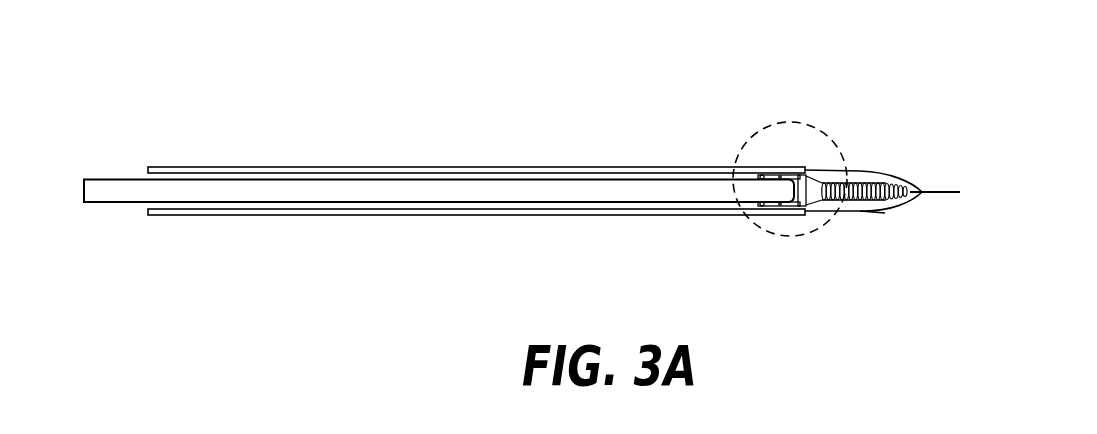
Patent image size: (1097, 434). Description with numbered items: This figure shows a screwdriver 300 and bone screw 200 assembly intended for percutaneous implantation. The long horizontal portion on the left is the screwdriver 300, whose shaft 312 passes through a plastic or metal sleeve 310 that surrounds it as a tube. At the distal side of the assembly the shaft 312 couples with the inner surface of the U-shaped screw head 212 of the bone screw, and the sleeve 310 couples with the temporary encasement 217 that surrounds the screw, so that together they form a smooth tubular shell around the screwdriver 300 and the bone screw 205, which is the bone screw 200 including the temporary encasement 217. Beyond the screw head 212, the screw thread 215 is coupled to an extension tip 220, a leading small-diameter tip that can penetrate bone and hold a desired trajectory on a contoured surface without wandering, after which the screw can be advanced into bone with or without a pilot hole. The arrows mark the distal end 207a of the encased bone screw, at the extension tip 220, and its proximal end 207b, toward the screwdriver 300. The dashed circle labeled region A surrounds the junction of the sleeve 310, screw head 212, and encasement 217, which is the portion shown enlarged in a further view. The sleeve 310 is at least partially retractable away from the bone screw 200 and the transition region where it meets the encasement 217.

The screwdriver 300 is at (563, 190).
The plastic or metal sleeve 310 is at (418, 168).
The bone screw 200 is at (893, 212).
The bone screw 205 is at (902, 177).
The extension tip 220 is at (945, 192).
The temporary encasement 217 is at (885, 213).
The distal end 207a is at (933, 167).
The proximal end 207b is at (778, 252).
The region A is at (748, 213).
The shaft 312 is at (45, 433).
The screw thread 215 is at (148, 433).
The U-shaped screw head 212 is at (259, 433).